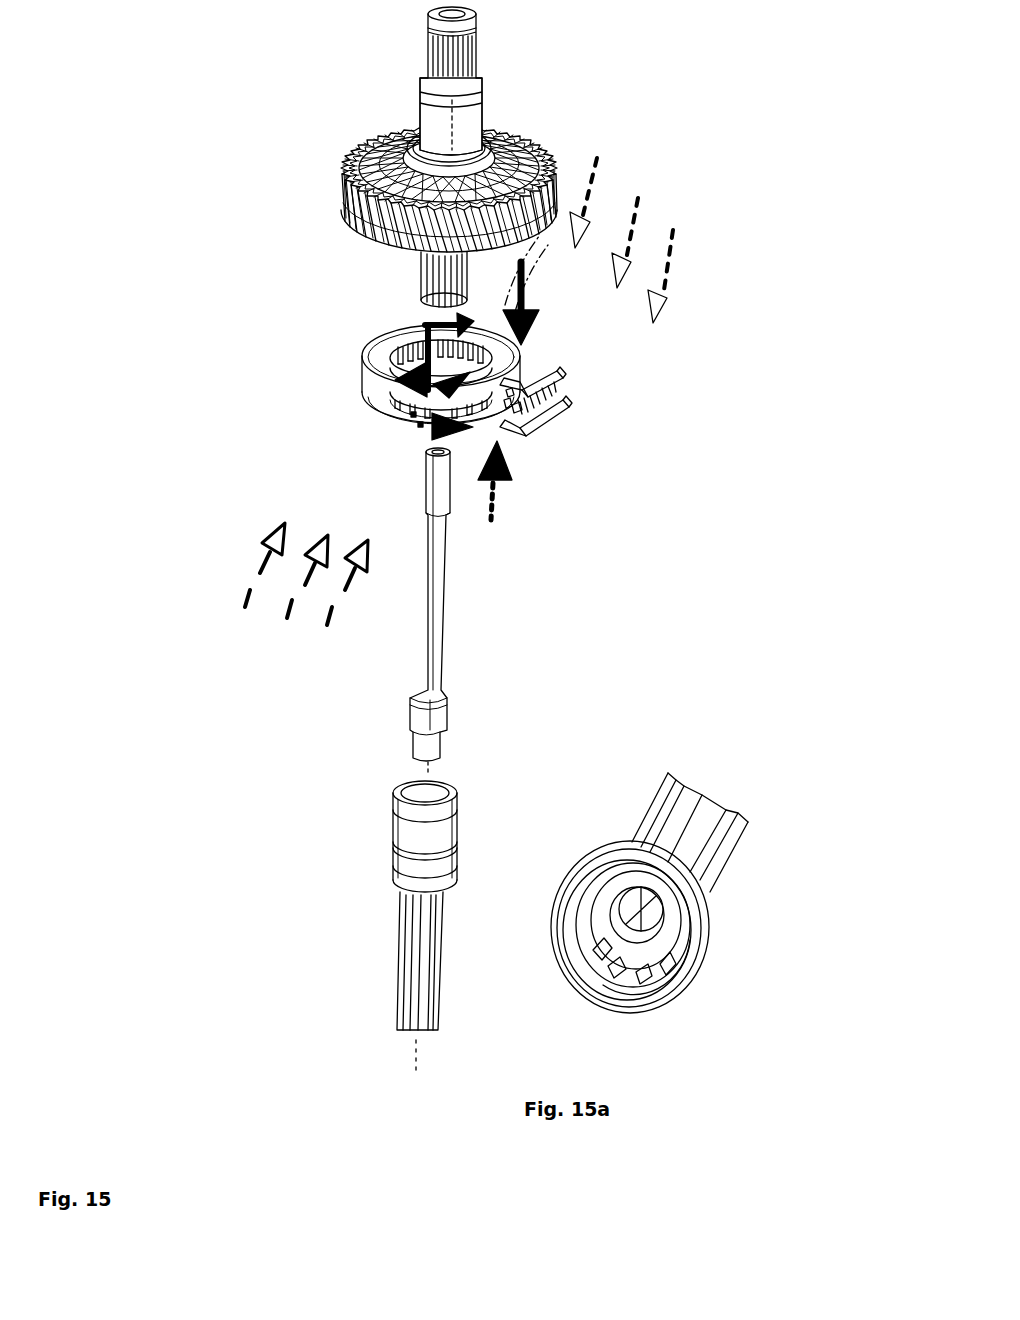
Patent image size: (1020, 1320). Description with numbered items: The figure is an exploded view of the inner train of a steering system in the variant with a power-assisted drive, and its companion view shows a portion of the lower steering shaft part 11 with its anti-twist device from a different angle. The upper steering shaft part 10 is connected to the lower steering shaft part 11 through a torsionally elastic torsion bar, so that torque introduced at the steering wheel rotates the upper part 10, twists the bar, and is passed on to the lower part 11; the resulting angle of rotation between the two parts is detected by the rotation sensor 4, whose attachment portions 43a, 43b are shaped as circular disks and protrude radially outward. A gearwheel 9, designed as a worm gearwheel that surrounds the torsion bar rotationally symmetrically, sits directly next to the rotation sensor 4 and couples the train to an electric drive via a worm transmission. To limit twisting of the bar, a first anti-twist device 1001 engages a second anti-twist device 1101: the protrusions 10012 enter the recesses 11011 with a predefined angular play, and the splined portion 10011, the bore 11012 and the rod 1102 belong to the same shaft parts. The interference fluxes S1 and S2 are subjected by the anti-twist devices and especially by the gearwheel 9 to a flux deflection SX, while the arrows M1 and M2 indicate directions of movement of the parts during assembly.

In FIG. 15, the upper steering shaft part 10 is at (435, 132).
In FIG. 15, the gearwheel 9 is at (360, 182).
In FIG. 15, the first anti-twist device 1001 is at (338, 244).
In FIG. 15, the protrusions 10012 is at (399, 271).
In FIG. 15, the splined portion 10011 is at (420, 285).
In FIG. 15, the first movement direction M1 is at (428, 325).
In FIG. 15, the attachment portion 43a is at (375, 352).
In FIG. 15, the attachment portion 43b is at (372, 390).
In FIG. 15, the rotation sensor 4 is at (577, 449).
In FIG. 15, the second movement direction M2 is at (492, 498).
In FIG. 15, the interference flux S1 is at (665, 278).
In FIG. 15, the flux deflection SX is at (533, 262).
In FIG. 15, the interference flux S2 is at (358, 560).
In FIG. 15, the rod 1102 is at (430, 660).
In FIG. 15, the second anti-twist device 1101 is at (425, 793).
In FIG. 15A, the second anti-twist device 1101 is at (637, 951).
In FIG. 15, the lower steering shaft part 11 is at (407, 957).
In FIG. 15A, the lower steering shaft part 11 is at (710, 855).
In FIG. 15A, the recesses 11011 is at (640, 980).
In FIG. 15A, the sleeve bore 11012 is at (605, 970).